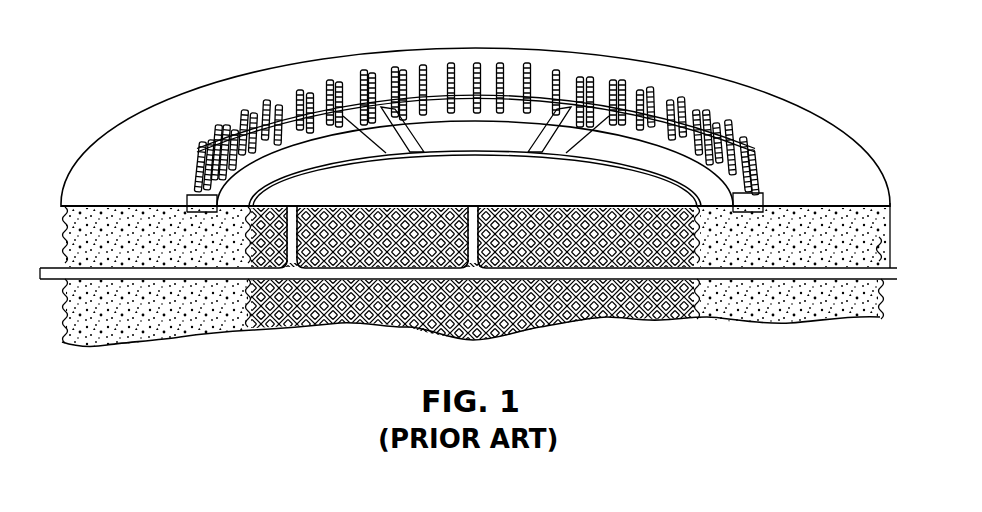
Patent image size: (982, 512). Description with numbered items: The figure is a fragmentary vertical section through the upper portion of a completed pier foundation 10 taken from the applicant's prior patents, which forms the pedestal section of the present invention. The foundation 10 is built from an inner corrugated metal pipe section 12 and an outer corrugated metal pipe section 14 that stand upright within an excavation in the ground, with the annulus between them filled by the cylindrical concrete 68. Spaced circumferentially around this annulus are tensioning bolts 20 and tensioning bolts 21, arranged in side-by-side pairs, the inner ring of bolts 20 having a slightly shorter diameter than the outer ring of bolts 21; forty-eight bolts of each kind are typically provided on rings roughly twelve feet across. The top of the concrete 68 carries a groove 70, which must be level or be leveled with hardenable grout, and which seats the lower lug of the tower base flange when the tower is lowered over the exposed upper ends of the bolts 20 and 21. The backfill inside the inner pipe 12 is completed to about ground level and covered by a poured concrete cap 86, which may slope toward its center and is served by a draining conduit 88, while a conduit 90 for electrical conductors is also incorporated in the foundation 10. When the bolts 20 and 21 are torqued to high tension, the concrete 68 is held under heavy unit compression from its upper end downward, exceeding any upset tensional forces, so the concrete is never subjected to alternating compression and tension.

The pier foundation 10 is at (475, 114).
The inner corrugated metal pipe section 12 is at (710, 320).
The outer corrugated metal pipe section 14 is at (885, 318).
The tensioning bolts 20 is at (253, 110).
The tensioning bolts 21 is at (243, 110).
The concrete 68 is at (135, 140).
The groove 70 is at (195, 202).
The concrete cap 86 is at (386, 199).
The draining conduit 88 is at (803, 272).
The conduit 90 is at (197, 274).